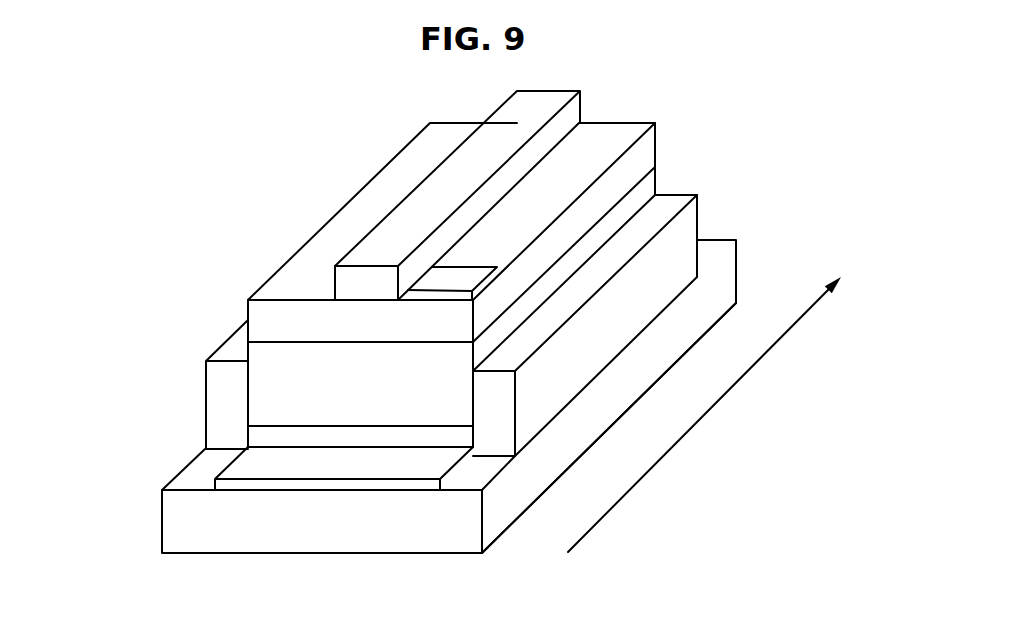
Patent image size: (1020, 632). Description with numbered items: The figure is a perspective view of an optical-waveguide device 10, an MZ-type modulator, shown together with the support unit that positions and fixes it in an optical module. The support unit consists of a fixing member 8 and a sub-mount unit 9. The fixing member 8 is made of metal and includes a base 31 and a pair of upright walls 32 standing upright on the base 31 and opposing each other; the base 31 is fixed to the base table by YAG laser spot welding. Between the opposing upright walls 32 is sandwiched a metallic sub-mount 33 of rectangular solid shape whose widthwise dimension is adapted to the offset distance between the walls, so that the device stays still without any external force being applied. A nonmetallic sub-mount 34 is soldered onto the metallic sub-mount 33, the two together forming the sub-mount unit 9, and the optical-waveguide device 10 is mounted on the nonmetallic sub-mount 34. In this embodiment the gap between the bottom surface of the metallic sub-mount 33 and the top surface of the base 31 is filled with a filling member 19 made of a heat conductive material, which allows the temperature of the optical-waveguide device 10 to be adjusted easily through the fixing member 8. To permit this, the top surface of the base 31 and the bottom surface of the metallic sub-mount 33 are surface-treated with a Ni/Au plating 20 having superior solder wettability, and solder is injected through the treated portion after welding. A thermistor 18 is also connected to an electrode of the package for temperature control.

The fixing member 8 is at (138, 511).
The base 31 is at (722, 287).
The upright walls 32 is at (686, 229).
The sub-mount unit 9 is at (641, 150).
The metallic sub-mount 33 is at (268, 371).
The nonmetallic sub-mount 34 is at (263, 315).
The optical-waveguide device 10 is at (380, 223).
The thermistor 18 is at (470, 268).
The filling member 19 is at (452, 433).
The Ni/Au plating 20 is at (253, 467).